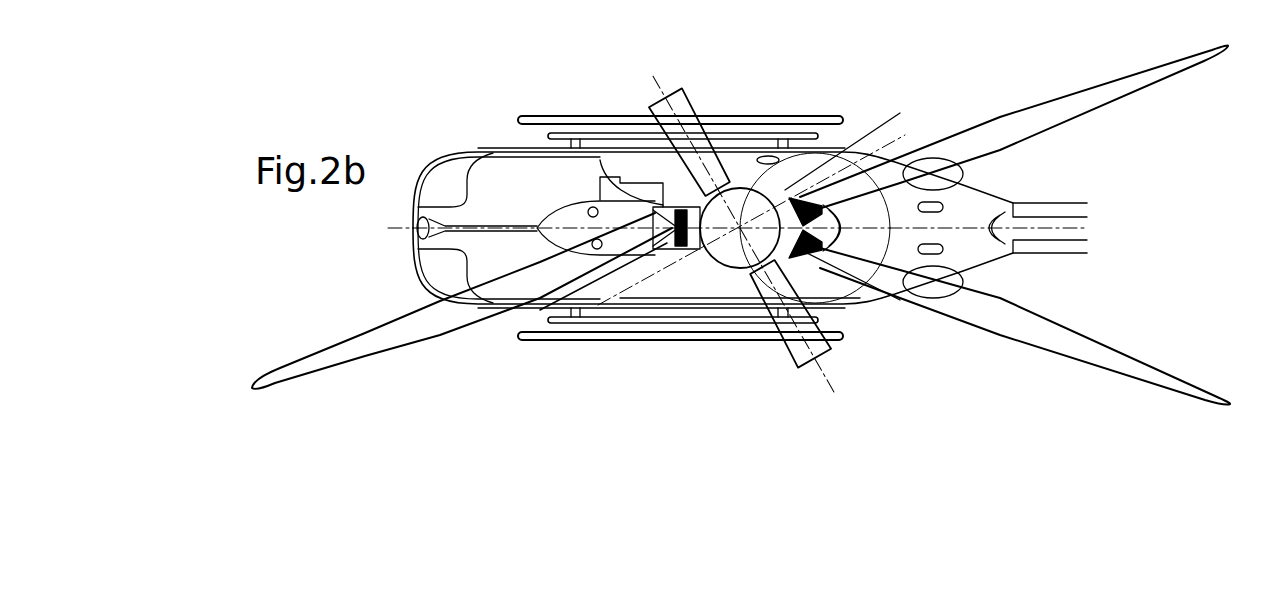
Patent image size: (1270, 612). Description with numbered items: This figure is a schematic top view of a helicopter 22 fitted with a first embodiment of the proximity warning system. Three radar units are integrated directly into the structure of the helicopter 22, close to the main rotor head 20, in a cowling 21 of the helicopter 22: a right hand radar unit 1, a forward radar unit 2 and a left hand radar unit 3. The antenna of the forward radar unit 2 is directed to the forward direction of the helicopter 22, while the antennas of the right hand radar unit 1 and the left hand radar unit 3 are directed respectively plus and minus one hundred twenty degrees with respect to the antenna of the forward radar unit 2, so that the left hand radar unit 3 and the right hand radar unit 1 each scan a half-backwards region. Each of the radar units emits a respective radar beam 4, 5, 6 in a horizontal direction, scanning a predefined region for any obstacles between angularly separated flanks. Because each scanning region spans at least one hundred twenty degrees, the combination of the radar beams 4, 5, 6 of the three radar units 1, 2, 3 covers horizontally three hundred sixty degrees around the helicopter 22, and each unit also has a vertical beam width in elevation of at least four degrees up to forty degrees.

The right hand radar unit 1 is at (823, 200).
The forward radar unit 2 is at (600, 178).
The left hand radar unit 3 is at (850, 288).
The radar beam 4 is at (1015, 127).
The radar beam 5 is at (372, 338).
The radar beam 6 is at (1117, 363).
The main rotor head 20 is at (742, 186).
The cowling 21 is at (643, 200).
The helicopter 22 is at (499, 177).